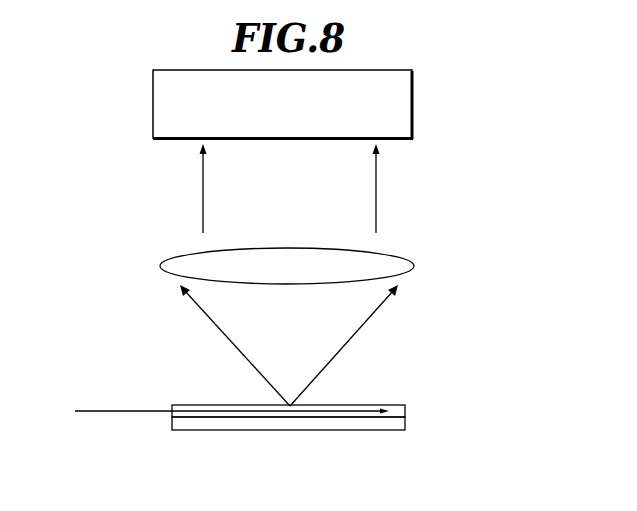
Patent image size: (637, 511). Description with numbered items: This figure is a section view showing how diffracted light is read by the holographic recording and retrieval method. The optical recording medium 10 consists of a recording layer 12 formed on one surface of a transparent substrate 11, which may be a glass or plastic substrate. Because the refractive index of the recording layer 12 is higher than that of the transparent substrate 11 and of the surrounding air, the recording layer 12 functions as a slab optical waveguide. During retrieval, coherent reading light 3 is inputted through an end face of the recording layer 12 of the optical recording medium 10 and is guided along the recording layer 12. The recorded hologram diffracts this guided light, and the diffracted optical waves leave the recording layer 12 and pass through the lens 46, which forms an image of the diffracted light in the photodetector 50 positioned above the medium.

The photodetector 50 is at (412, 117).
The lens 46 is at (395, 262).
The optical recording medium 10 is at (359, 426).
The recording layer 12 is at (405, 412).
The transparent substrate 11 is at (324, 441).
The reading light 3 is at (102, 410).